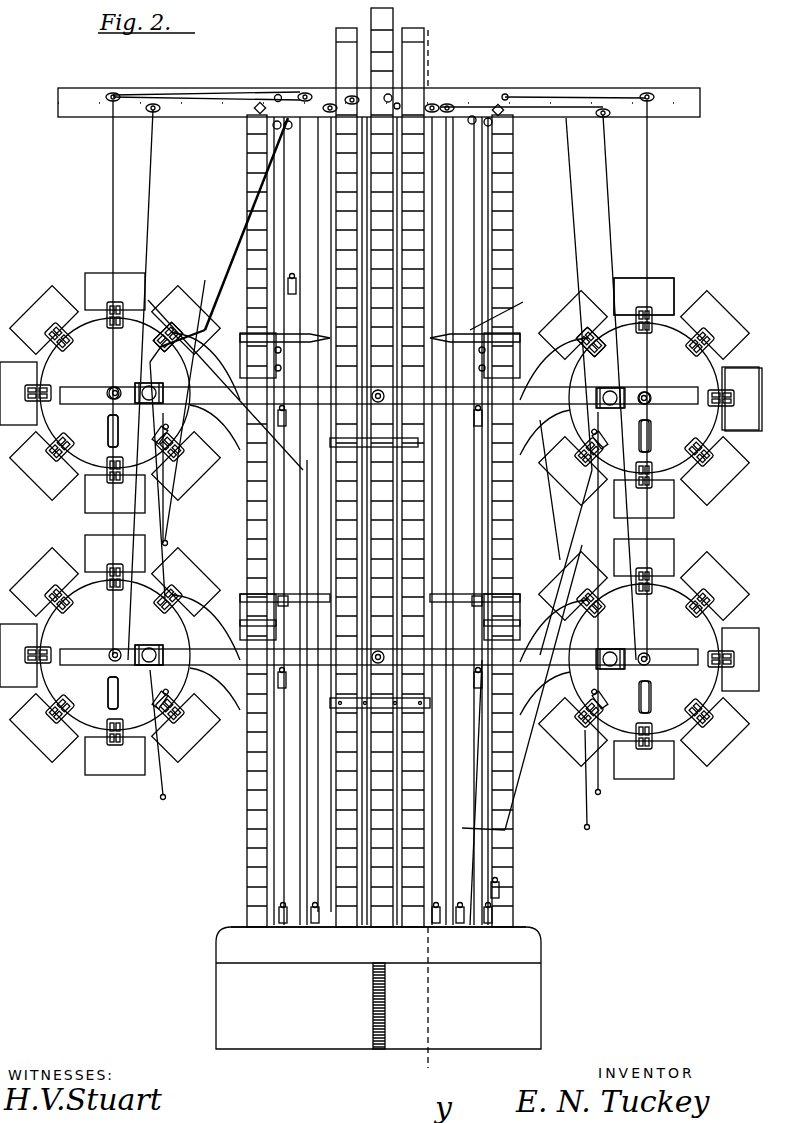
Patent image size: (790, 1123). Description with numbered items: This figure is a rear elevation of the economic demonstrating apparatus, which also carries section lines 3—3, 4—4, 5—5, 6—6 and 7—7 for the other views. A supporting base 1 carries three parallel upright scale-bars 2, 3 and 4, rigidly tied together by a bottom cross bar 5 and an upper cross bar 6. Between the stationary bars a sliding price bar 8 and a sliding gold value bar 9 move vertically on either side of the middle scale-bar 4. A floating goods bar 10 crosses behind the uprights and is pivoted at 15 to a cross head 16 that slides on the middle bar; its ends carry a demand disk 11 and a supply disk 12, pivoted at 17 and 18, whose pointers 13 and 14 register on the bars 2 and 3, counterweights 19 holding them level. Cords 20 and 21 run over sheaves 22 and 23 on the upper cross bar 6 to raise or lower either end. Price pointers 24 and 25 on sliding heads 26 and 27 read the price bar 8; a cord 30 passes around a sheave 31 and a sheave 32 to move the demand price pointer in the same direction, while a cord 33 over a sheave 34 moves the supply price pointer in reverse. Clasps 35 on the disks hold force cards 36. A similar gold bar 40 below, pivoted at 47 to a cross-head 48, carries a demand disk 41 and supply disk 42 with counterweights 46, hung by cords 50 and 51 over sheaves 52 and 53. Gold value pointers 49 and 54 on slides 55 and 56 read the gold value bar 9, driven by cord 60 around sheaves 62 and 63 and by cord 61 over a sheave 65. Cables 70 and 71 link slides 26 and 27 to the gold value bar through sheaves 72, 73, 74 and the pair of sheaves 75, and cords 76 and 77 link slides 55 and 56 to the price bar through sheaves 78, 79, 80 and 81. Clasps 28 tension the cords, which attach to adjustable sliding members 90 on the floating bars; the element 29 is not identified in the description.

The supporting base 1 is at (528, 1000).
The upright scale-bar 2 is at (513, 893).
The upright scale-bar 3 is at (247, 868).
The middle scale-bar 4 is at (250, 92).
The bottom cross bar 5 is at (536, 945).
The upper cross bar 6 is at (689, 98).
The clamp 7 is at (246, 598).
The price bar 8 is at (343, 477).
The gold value bar 9 is at (413, 477).
The goods bar 10 is at (232, 404).
The demand disk 11 is at (649, 398).
The supply disk 12 is at (110, 393).
The demand pointer 13 is at (560, 385).
The supply pointer 14 is at (206, 521).
The pivot 15 is at (372, 397).
The cross head 16 is at (420, 445).
The pivot 17 is at (649, 394).
The pivot 18 is at (110, 387).
The counterweight 19 is at (108, 431).
The cord 20 is at (648, 221).
The cord 21 is at (112, 206).
The sheave 22 is at (433, 104).
The sheave 23 is at (114, 92).
The price pointer 24 is at (506, 310).
The price pointer 25 is at (262, 296).
The sliding head 26 is at (482, 341).
The sliding head 27 is at (258, 336).
The clasp 28 is at (288, 284).
The diagonal slot block 29 is at (160, 460).
The cord 30 is at (478, 172).
The sheave 31 is at (480, 930).
The sheave 32 is at (492, 127).
The cord 33 is at (282, 232).
The sheave 34 is at (272, 128).
The clasp 35 is at (593, 356).
The force card 36 is at (672, 298).
The gold bar 40 is at (228, 665).
The demand disk 41 is at (649, 659).
The supply disk 42 is at (110, 655).
The counterweight 46 is at (108, 691).
The pivot 47 is at (372, 658).
The cross-head 48 is at (431, 700).
The gold value pointer 49 is at (440, 604).
The cord 50 is at (612, 221).
The cord 51 is at (146, 203).
The sheave 52 is at (450, 104).
The sheave 53 is at (312, 103).
The gold value pointer 54 is at (322, 692).
The slide 55 is at (512, 632).
The slide 56 is at (248, 632).
The cord 60 is at (500, 575).
The cord 61 is at (280, 530).
The sheave 62 is at (434, 926).
The sheave 63 is at (470, 113).
The sheave 65 is at (280, 94).
The cable 70 is at (412, 246).
The cable 71 is at (350, 250).
The sheave 72 is at (405, 536).
The sheave 73 is at (405, 109).
The sheave 74 is at (318, 536).
The pair of sheaves 75 is at (306, 93).
The cord 76 is at (508, 829).
The cord 77 is at (294, 847).
The sheave 78 is at (435, 536).
The sheave 79 is at (374, 105).
The sheave 80 is at (294, 536).
The sheave 81 is at (352, 97).
The sliding member 90 is at (608, 692).